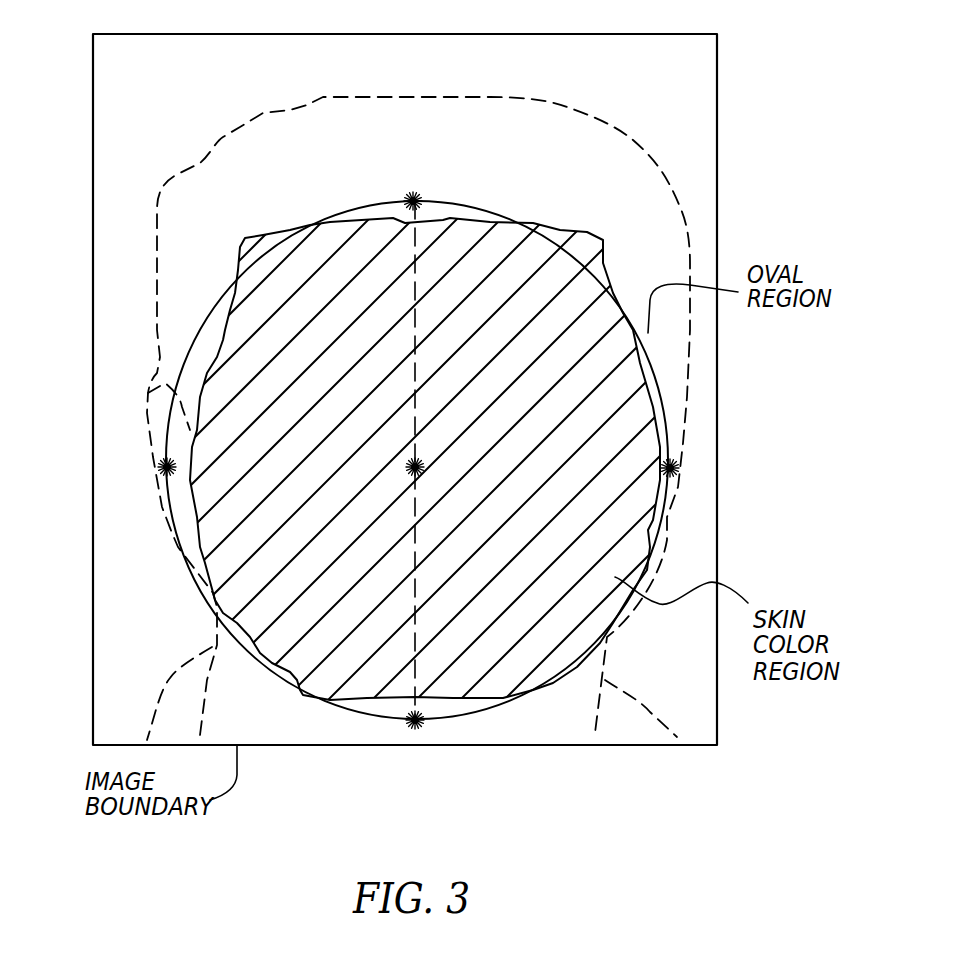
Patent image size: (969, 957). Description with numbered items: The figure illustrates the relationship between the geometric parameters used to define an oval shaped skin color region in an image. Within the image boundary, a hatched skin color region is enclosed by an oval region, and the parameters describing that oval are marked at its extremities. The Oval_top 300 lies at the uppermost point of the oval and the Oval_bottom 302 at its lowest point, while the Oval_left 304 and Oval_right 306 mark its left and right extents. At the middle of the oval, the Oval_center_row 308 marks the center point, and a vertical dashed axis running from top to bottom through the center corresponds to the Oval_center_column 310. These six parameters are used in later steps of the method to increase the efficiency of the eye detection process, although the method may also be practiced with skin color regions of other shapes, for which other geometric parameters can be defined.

The Oval_top 300 is at (416, 200).
The Oval_bottom 302 is at (417, 725).
The Oval_left 304 is at (164, 470).
The Oval_right 306 is at (673, 470).
The Oval_center_row 308 is at (413, 466).
The Oval_center_column 310 is at (415, 518).